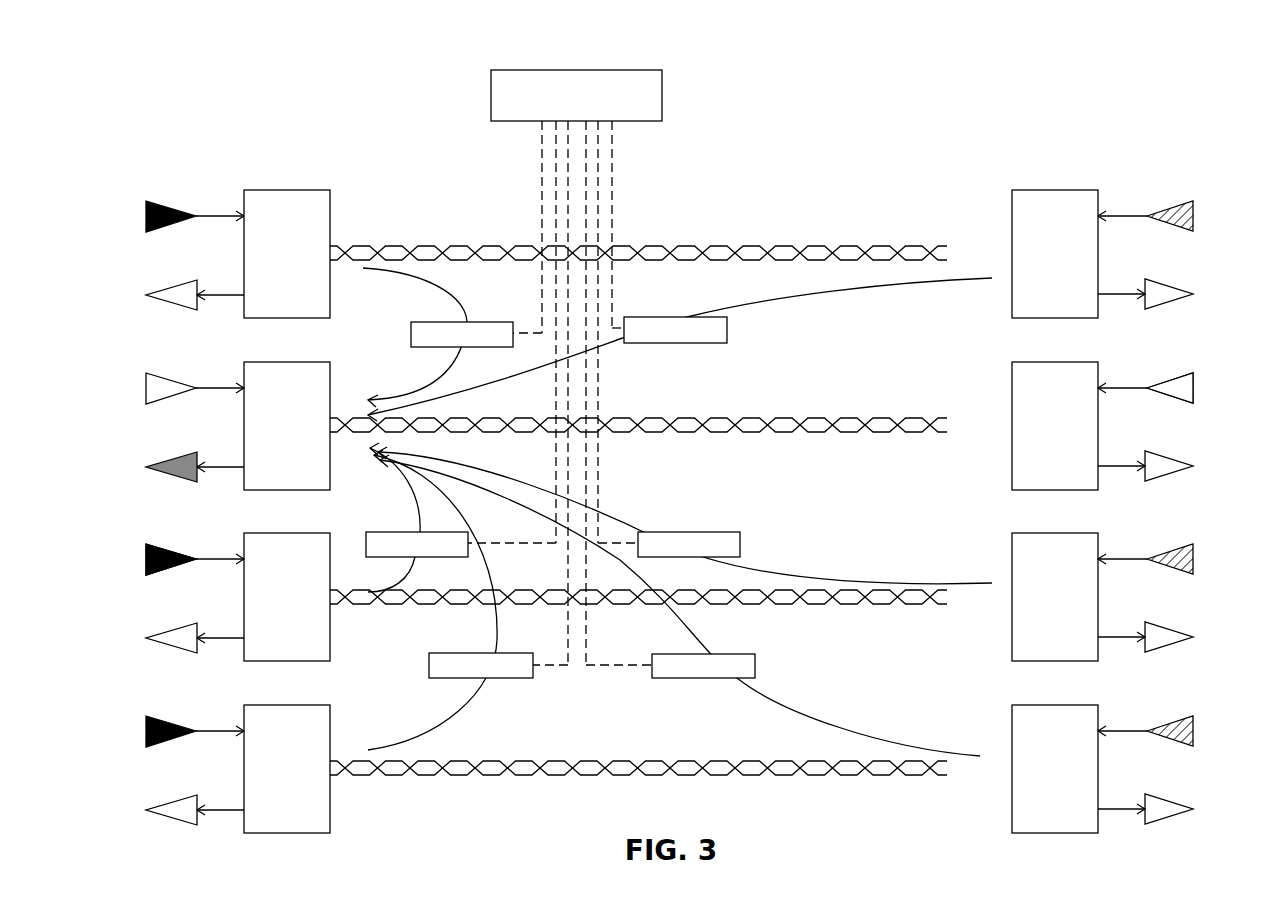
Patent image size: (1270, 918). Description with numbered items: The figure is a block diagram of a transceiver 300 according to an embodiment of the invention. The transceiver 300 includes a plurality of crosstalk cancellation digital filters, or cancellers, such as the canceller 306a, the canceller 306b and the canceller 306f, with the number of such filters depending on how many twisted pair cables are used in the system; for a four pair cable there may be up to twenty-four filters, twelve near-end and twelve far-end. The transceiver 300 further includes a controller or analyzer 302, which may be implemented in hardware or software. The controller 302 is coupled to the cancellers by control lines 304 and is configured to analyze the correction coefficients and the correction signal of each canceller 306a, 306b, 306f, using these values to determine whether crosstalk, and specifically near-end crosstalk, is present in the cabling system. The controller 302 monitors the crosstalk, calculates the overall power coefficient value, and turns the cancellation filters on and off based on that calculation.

The transceiver 300 is at (980, 146).
The controller 302 is at (663, 93).
The control lines 304 is at (542, 176).
The crosstalk cancellation digital filter 306a is at (411, 336).
The crosstalk cancellation digital filter 306b is at (727, 330).
The crosstalk cancellation digital filter 306f is at (755, 663).